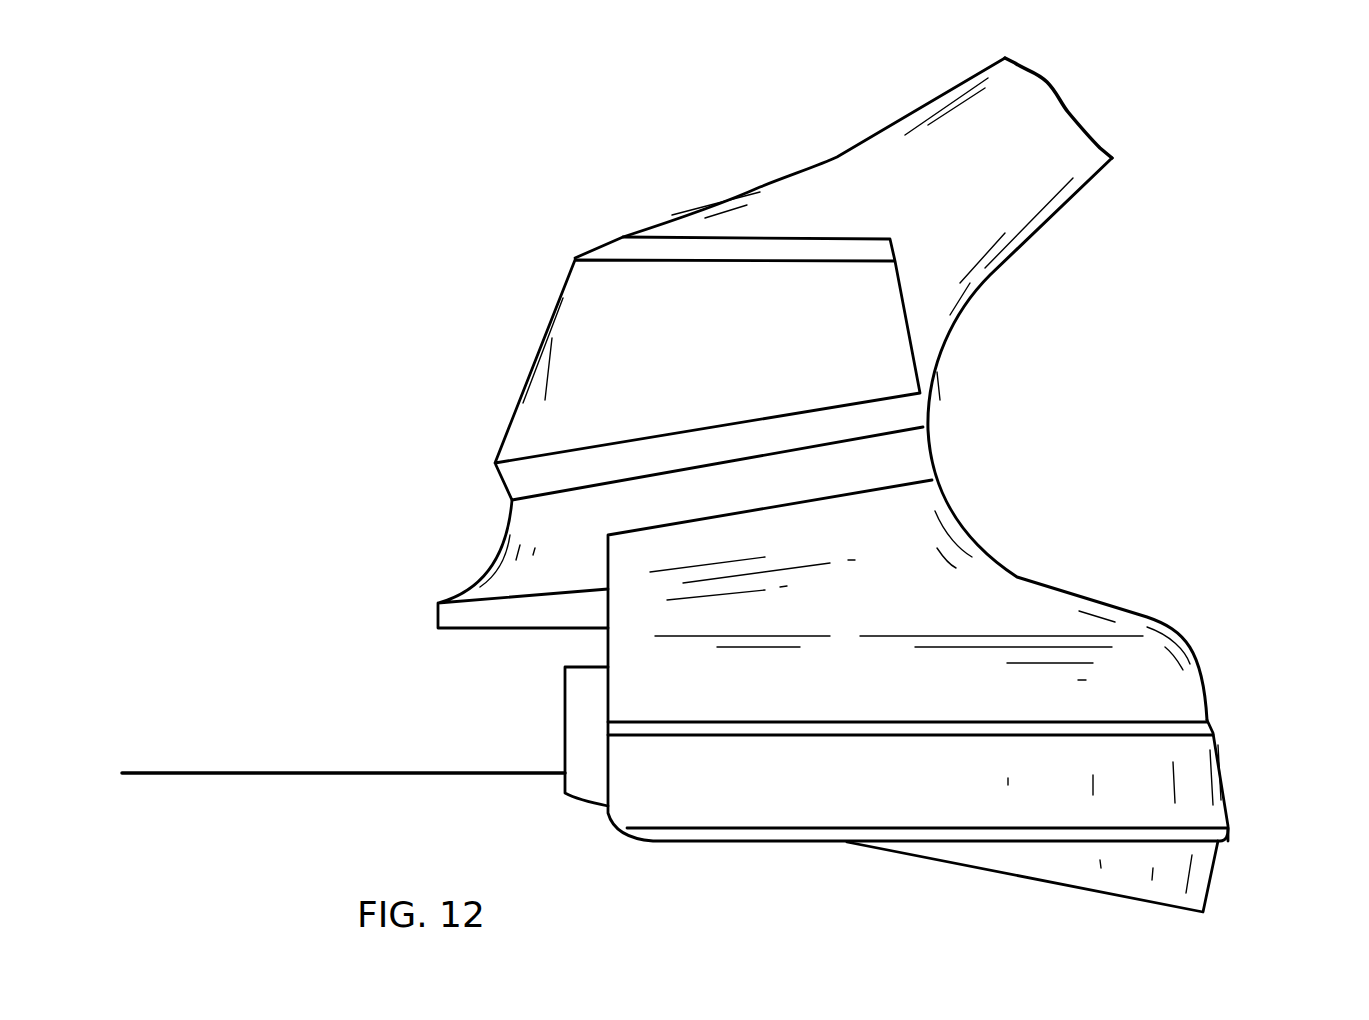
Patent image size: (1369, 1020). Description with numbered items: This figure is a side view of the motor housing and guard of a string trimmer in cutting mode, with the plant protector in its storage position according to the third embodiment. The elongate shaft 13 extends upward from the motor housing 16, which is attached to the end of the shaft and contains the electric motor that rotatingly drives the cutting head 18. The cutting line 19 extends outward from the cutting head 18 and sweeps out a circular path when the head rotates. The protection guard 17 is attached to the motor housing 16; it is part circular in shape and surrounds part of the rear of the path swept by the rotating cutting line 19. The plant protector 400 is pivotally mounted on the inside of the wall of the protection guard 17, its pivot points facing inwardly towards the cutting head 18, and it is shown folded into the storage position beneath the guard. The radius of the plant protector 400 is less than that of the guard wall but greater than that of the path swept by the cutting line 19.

The elongate shaft 13 is at (990, 197).
The motor housing 16 is at (693, 336).
The protection guard 17 is at (902, 802).
The cutting head 18 is at (578, 778).
The cutting line 19 is at (322, 770).
The plant protector 400 is at (1202, 868).